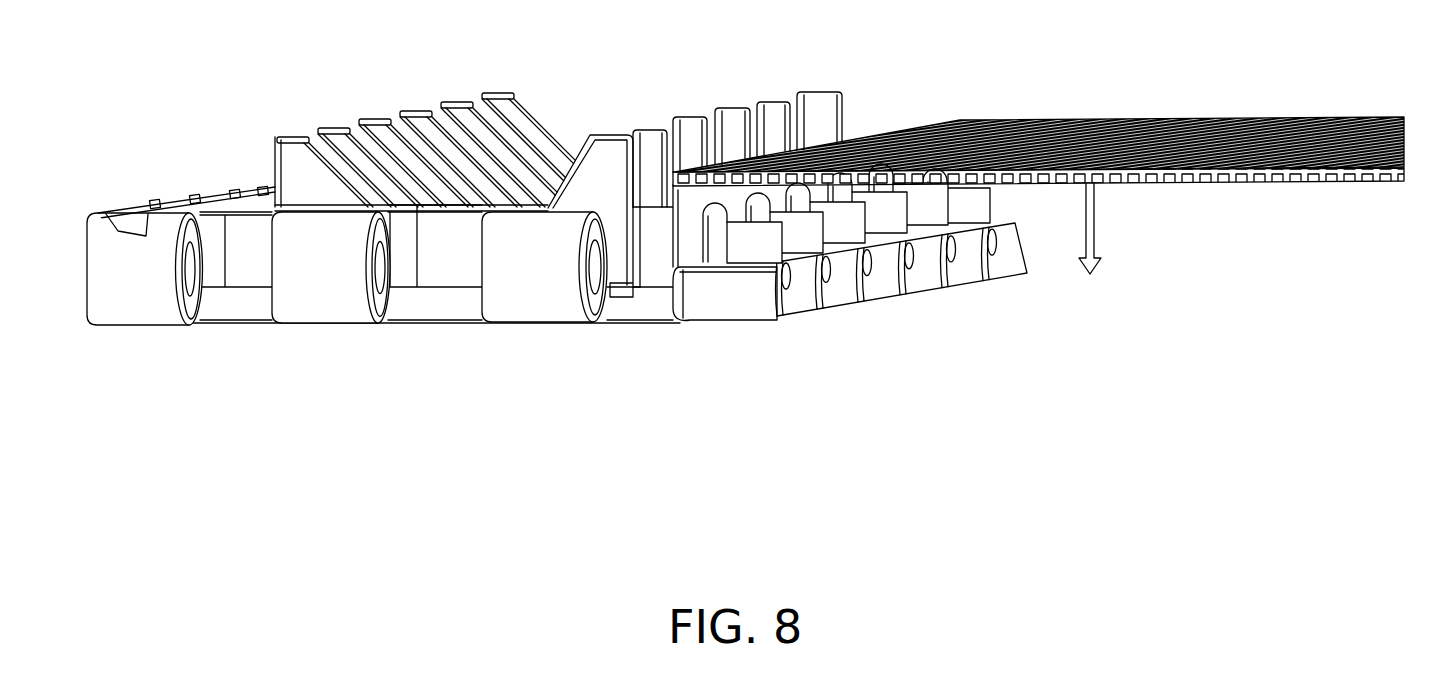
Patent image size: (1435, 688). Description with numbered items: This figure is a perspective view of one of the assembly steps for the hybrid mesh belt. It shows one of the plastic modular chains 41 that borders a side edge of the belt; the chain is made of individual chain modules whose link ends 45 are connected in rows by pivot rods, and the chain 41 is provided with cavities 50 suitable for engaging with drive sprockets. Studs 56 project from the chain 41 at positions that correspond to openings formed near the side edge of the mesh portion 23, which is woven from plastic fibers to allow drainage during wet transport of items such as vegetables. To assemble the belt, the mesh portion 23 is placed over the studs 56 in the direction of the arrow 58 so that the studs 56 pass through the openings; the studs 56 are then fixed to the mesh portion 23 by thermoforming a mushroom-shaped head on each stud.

The mesh portion 23 is at (1257, 115).
The chain 41 is at (177, 189).
The link ends 45 is at (535, 305).
The cavities 50 is at (500, 207).
The studs 56 is at (760, 247).
The arrow 58 is at (1092, 227).